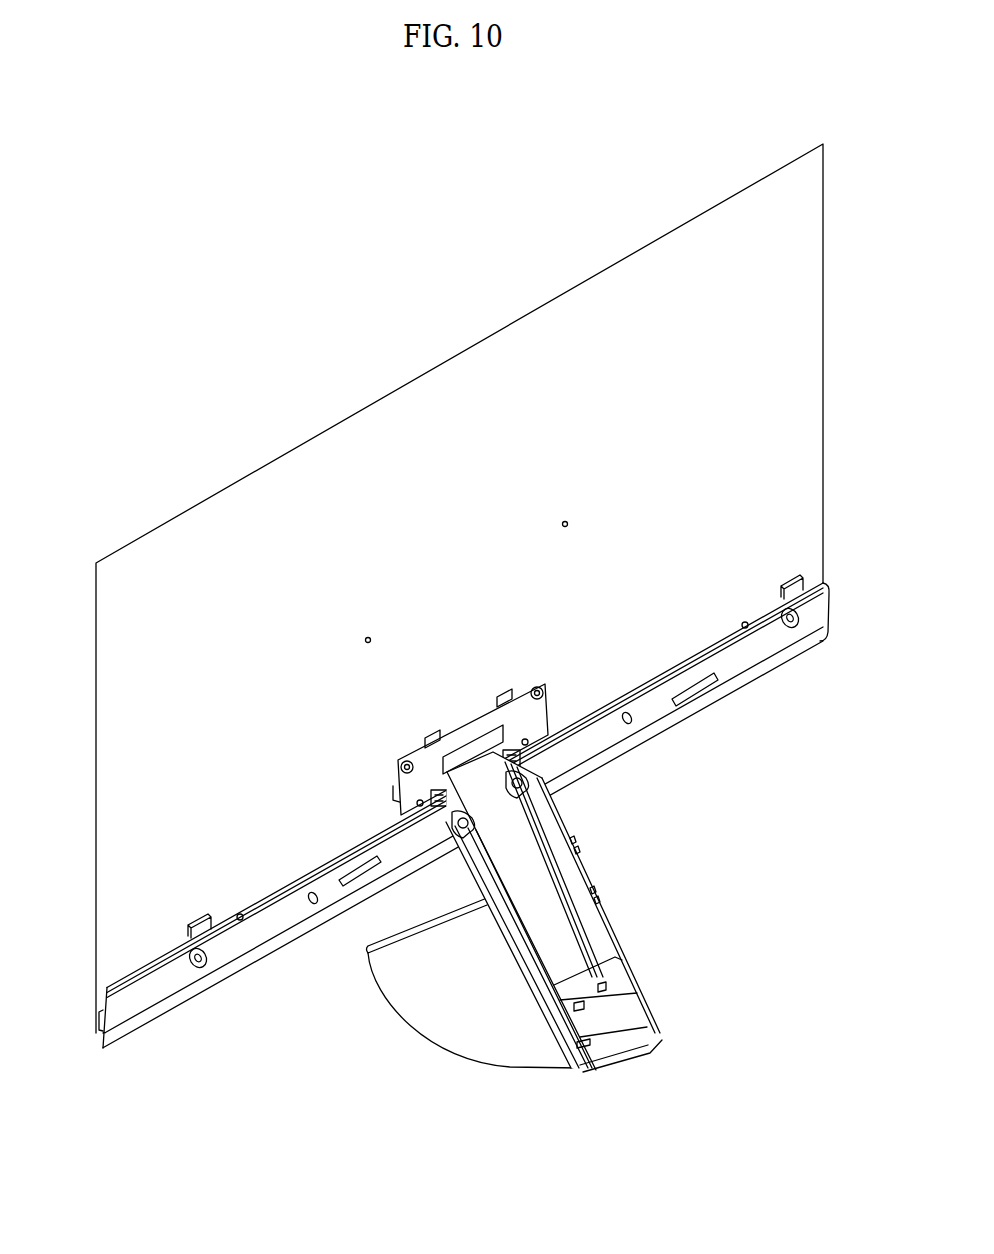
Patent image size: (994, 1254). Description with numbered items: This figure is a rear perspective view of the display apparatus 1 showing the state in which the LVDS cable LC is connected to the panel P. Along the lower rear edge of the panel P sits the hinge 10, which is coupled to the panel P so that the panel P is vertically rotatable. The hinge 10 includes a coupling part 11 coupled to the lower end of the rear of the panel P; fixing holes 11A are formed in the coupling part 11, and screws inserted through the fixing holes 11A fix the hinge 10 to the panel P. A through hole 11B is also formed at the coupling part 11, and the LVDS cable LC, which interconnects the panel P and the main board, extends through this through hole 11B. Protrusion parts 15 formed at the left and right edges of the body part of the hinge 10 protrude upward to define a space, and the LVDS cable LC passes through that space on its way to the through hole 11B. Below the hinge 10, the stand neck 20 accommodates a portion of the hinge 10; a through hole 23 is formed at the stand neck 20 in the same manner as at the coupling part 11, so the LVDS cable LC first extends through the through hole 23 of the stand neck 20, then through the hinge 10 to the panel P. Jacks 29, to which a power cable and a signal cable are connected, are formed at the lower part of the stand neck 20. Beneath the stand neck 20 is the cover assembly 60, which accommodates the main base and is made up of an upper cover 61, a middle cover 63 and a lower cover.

The display apparatus 1 is at (476, 99).
The panel P is at (413, 381).
The hinge 10 is at (448, 720).
The coupling part 11 is at (499, 720).
The fixing holes 11A is at (546, 690).
The through hole 11B is at (475, 727).
The LVDS cable LC is at (528, 852).
The protrusion parts 15 is at (530, 933).
The stand neck 20 is at (602, 947).
The through hole 23 is at (557, 968).
The jacks 29 is at (585, 1046).
The cover assembly 60 is at (428, 1003).
The upper cover 61 is at (362, 938).
The middle cover 63 is at (458, 1036).